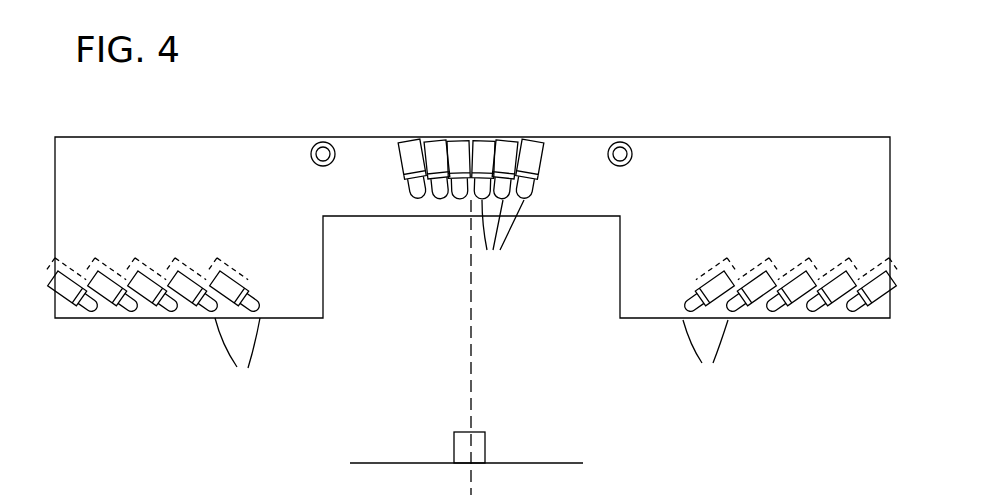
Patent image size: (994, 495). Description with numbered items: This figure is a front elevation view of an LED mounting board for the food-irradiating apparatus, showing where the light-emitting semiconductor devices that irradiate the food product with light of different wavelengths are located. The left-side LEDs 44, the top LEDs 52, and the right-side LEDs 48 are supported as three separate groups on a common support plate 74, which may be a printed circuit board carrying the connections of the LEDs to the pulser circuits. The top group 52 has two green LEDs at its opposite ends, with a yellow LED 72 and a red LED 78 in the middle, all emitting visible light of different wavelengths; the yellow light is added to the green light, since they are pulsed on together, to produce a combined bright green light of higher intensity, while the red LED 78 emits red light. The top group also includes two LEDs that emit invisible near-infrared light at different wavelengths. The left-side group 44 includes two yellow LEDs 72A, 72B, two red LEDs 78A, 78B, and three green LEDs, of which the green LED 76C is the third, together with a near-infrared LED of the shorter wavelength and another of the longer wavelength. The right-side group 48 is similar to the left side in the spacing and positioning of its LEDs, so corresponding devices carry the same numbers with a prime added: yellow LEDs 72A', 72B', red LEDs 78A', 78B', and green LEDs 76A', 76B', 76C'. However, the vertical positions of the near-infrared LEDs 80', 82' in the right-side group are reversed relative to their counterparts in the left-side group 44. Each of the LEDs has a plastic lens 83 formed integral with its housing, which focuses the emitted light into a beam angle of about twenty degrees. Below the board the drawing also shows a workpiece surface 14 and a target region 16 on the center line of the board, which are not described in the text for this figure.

The workpiece 14 is at (513, 462).
The target region 16 is at (477, 432).
The left-side LED group 44 is at (128, 224).
The right-side LED group 48 is at (768, 224).
The top LED group 52 is at (451, 116).
The yellow LED 72 is at (463, 137).
The yellow LED 72A is at (66, 289).
The yellow LED 72B is at (109, 280).
The yellow LED 72A' is at (873, 290).
The yellow LED 72B' is at (834, 265).
The common support plate 74 is at (660, 137).
The green LED 76C is at (236, 273).
The green LED 76A' is at (830, 313).
The green LED 76B' is at (754, 321).
The green LED 76C' is at (700, 273).
The red LED 78 is at (483, 137).
The red LED 78A is at (192, 289).
The red LED 78B is at (66, 314).
The red LED 78A' is at (747, 291).
The red LED 78B' is at (873, 318).
The NIR LED 80' is at (790, 327).
The NIR LED 82' is at (790, 294).
The plastic lens 83 is at (471, 296).